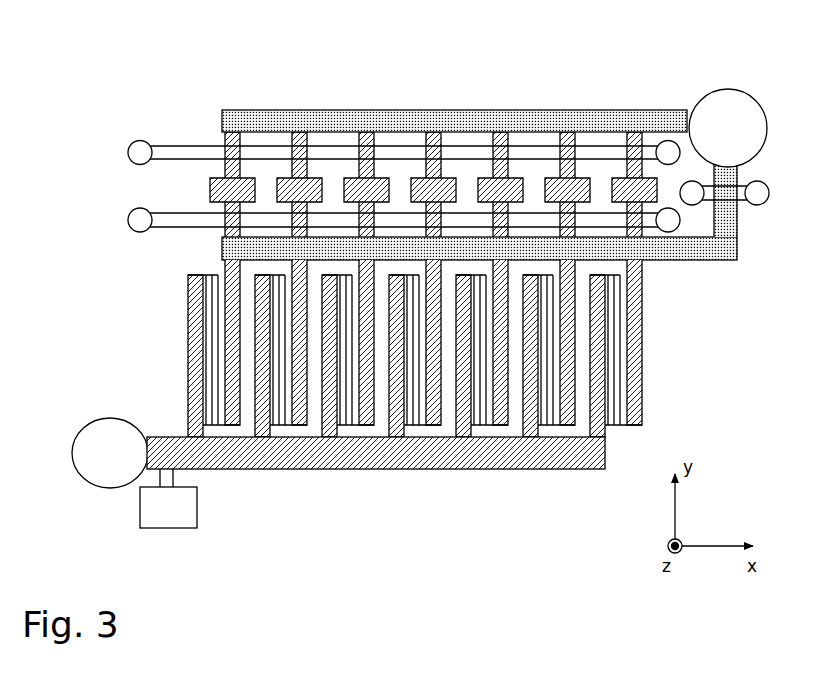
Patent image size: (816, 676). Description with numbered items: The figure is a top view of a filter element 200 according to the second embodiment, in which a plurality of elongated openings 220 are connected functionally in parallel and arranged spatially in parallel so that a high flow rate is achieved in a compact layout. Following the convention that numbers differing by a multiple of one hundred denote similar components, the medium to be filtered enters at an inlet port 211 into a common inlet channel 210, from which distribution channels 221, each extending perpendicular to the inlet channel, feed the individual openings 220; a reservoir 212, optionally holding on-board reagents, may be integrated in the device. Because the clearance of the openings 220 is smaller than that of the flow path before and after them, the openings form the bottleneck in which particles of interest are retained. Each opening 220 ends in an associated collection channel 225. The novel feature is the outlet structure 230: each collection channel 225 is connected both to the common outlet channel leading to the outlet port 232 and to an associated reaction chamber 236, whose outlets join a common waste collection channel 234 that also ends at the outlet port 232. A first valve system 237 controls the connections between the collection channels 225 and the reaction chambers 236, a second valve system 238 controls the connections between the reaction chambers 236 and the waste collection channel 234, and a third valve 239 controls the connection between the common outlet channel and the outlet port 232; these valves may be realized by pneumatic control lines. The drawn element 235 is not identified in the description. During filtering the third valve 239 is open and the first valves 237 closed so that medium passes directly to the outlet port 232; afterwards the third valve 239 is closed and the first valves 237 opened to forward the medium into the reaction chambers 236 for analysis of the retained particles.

The filter element 200 is at (354, 39).
The common inlet channel 210 is at (410, 470).
The inlet port 211 is at (93, 463).
The reservoir 212 is at (182, 515).
The openings 220 is at (350, 433).
The distribution channels 221 is at (195, 370).
The collection channels 225 is at (635, 363).
The outlet structure 230 is at (77, 82).
The outlet port 232 is at (720, 108).
The common waste collection channel 234 is at (462, 118).
The connecting pillar 235 is at (241, 139).
The reaction chambers 236 is at (212, 187).
The first valve system 237 is at (180, 222).
The second valve system 238 is at (170, 156).
The third valve 239 is at (727, 196).